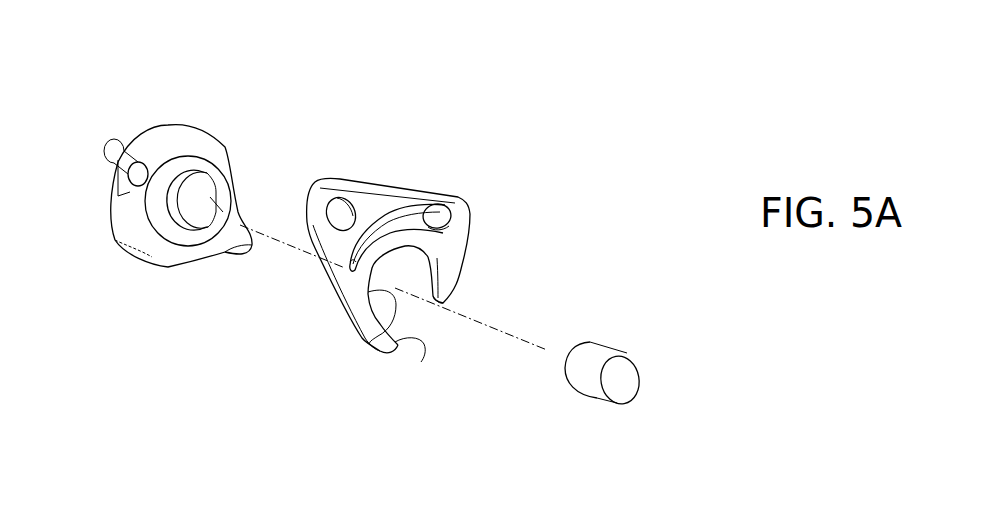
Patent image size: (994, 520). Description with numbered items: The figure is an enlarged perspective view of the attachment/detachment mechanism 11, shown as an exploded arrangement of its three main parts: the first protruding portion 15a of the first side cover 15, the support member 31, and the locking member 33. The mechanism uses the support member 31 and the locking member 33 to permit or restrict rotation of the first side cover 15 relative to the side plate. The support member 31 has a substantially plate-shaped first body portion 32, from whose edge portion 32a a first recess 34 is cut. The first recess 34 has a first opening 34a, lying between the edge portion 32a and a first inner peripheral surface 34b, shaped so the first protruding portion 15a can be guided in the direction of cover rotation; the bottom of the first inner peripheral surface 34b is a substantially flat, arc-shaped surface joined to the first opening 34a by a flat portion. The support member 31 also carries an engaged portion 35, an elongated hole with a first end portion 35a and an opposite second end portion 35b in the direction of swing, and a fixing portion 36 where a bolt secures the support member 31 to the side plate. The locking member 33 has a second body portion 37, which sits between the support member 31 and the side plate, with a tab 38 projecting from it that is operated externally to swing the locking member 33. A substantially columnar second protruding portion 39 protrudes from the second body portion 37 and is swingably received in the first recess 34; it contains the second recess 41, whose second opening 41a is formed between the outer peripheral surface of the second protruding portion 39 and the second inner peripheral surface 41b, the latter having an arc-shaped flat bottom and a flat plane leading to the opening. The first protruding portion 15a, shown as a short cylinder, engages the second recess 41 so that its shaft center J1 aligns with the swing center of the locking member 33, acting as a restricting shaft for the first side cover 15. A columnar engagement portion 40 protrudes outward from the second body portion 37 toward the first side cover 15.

The attachment/detachment mechanism 11 is at (556, 124).
The first protruding portion 15a is at (568, 419).
The first side cover 15 is at (587, 380).
The support member 31 is at (316, 310).
The first body portion 32 is at (382, 266).
The edge portion 32a is at (441, 306).
The locking member 33 is at (183, 219).
The first recess 34 is at (380, 380).
The first opening 34a is at (422, 347).
The first inner peripheral surface 34b is at (362, 340).
The engaged portion 35 is at (382, 193).
The first end portion 35a is at (347, 247).
The second end portion 35b is at (403, 212).
The fixing portion 36 is at (313, 184).
The second body portion 37 is at (138, 235).
The tab 38 is at (232, 255).
The second protruding portion 39 is at (155, 213).
The engagement portion 40 is at (130, 131).
The second recess 41 is at (264, 126).
The second opening 41a is at (205, 205).
The second inner peripheral surface 41b is at (223, 212).
The shaft center J1 is at (493, 325).